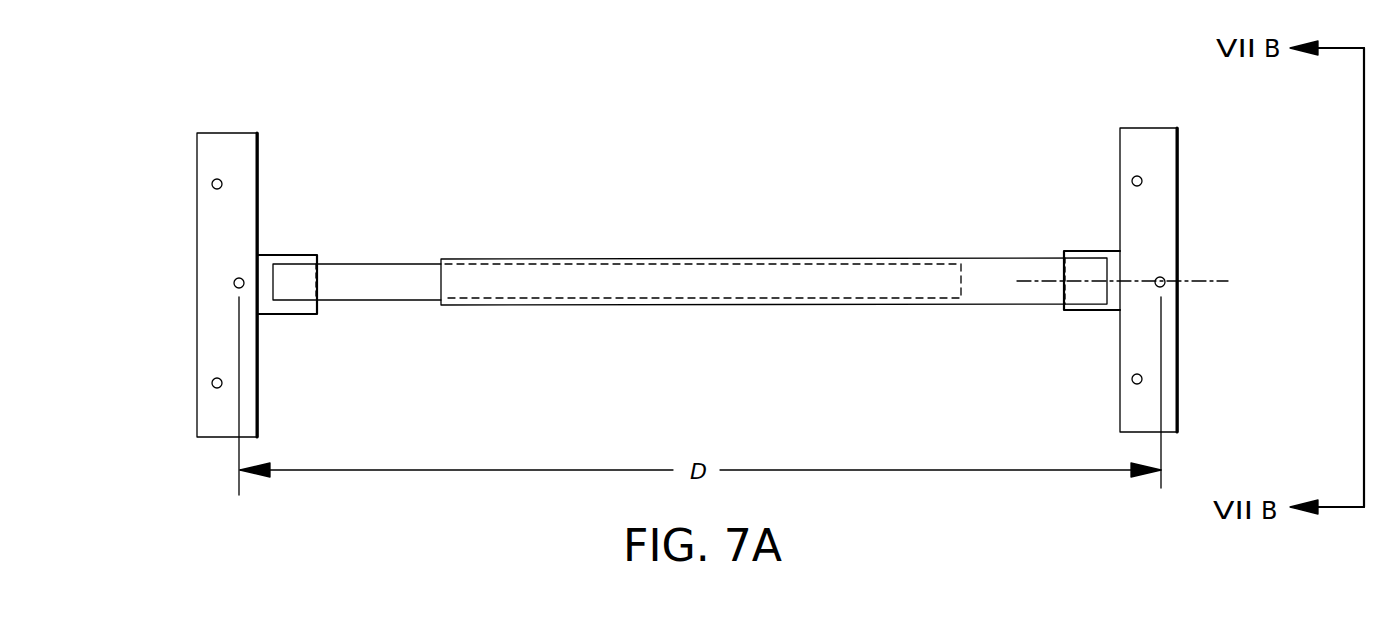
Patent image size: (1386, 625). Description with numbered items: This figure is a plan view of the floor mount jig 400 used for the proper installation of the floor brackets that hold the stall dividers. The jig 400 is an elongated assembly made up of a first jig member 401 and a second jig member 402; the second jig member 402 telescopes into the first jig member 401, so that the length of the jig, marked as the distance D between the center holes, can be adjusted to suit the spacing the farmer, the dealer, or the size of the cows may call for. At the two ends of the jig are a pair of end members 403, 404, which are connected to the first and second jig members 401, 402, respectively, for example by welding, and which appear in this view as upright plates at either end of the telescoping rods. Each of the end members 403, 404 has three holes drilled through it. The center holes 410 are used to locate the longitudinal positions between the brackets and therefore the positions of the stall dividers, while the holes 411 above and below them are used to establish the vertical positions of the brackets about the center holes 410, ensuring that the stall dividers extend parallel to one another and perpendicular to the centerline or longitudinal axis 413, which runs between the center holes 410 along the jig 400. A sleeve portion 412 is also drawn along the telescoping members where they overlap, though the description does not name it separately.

The floor mount jig 400 is at (853, 200).
The first jig member 401 is at (723, 258).
The second jig member 402 is at (382, 262).
The end member 403 is at (1180, 317).
The end member 404 is at (197, 342).
The center holes 410 is at (234, 286).
The holes 411 is at (212, 186).
The internal sleeve 412 is at (468, 275).
The centerline or longitudinal axis 413 is at (1207, 280).